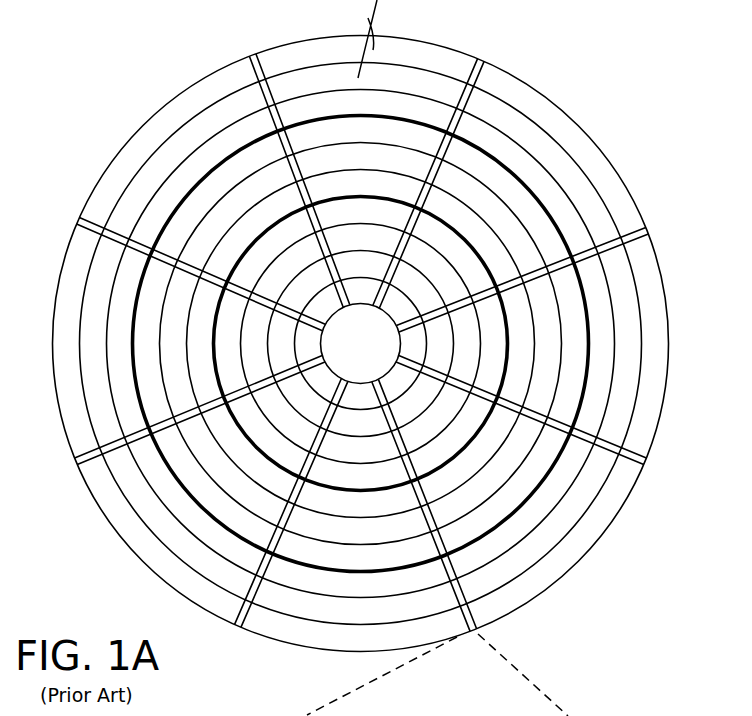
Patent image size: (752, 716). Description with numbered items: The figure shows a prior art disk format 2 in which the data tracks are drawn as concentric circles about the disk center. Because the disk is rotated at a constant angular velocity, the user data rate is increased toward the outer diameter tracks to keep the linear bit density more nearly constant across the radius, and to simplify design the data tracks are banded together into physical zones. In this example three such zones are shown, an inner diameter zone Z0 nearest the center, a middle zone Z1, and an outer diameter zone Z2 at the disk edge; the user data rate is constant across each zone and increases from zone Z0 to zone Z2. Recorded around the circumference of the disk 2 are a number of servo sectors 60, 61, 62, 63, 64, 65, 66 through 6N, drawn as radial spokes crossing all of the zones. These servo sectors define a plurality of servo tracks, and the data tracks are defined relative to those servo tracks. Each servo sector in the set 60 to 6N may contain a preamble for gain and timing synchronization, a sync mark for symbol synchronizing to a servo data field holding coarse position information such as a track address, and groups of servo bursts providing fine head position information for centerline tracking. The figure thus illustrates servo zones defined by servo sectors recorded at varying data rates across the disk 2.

The disk format 2 is at (571, 105).
The servo sector 6N is at (252, 62).
The servo sector 60 is at (481, 62).
The servo sector 61 is at (646, 231).
The servo sector 62 is at (646, 461).
The servo sector 63 is at (424, 505).
The servo sector 64 is at (238, 628).
The servo sector 65 is at (77, 463).
The servo sector 66 is at (78, 220).
The inner diameter physical zone Z0 is at (361, 344).
The middle physical zone Z1 is at (361, 344).
The outer diameter physical zone Z2 is at (361, 344).